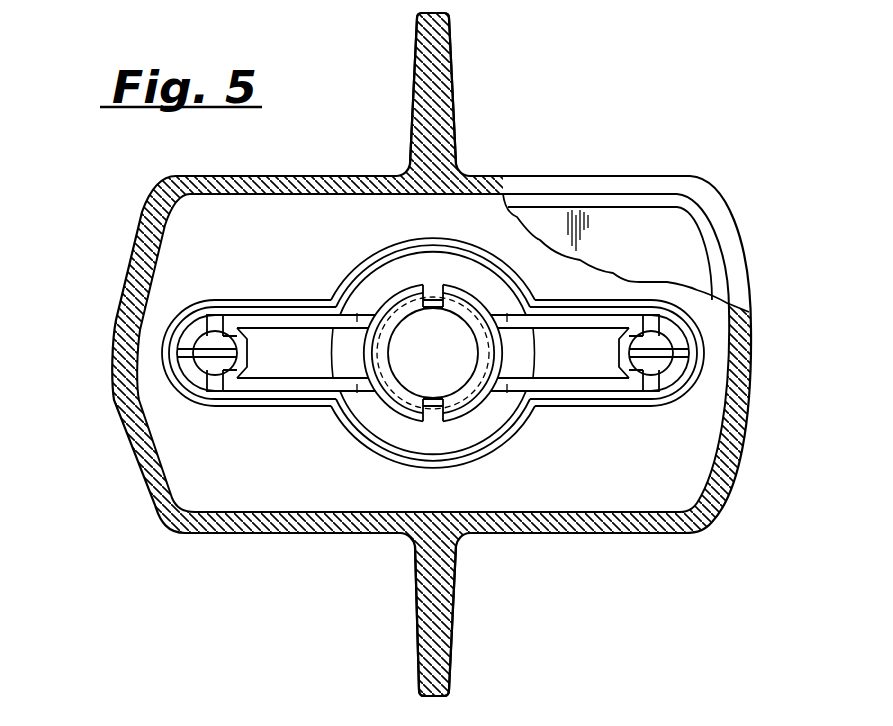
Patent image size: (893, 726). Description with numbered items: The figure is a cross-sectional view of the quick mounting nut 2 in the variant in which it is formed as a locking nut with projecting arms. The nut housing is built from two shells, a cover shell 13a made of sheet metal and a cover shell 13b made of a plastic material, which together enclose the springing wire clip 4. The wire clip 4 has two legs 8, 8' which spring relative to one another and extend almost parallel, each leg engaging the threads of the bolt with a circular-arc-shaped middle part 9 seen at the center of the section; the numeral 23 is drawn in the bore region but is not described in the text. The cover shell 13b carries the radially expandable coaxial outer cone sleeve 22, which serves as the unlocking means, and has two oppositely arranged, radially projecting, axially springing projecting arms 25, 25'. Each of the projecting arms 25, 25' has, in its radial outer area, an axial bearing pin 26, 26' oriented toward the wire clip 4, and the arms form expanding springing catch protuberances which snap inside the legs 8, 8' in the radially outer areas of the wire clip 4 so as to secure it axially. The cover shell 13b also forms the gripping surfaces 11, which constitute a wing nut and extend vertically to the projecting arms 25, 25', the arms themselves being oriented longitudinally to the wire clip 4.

The quick mounting nut 2 is at (616, 120).
The wire clip 4 is at (433, 344).
The leg 8 is at (433, 425).
The leg 8' is at (433, 272).
The circular-arc-shaped middle part 9 is at (410, 288).
The gripping surfaces 11 is at (412, 78).
The cover shell 13a is at (656, 263).
The cover shell 13b is at (453, 610).
The outer cone sleeve 22 is at (465, 278).
The pinion bore 23 is at (396, 401).
The projecting arm 25 is at (296, 398).
The projecting arm 25' is at (570, 397).
The axial bearing pin 26 is at (207, 317).
The axial bearing pin 26' is at (658, 388).